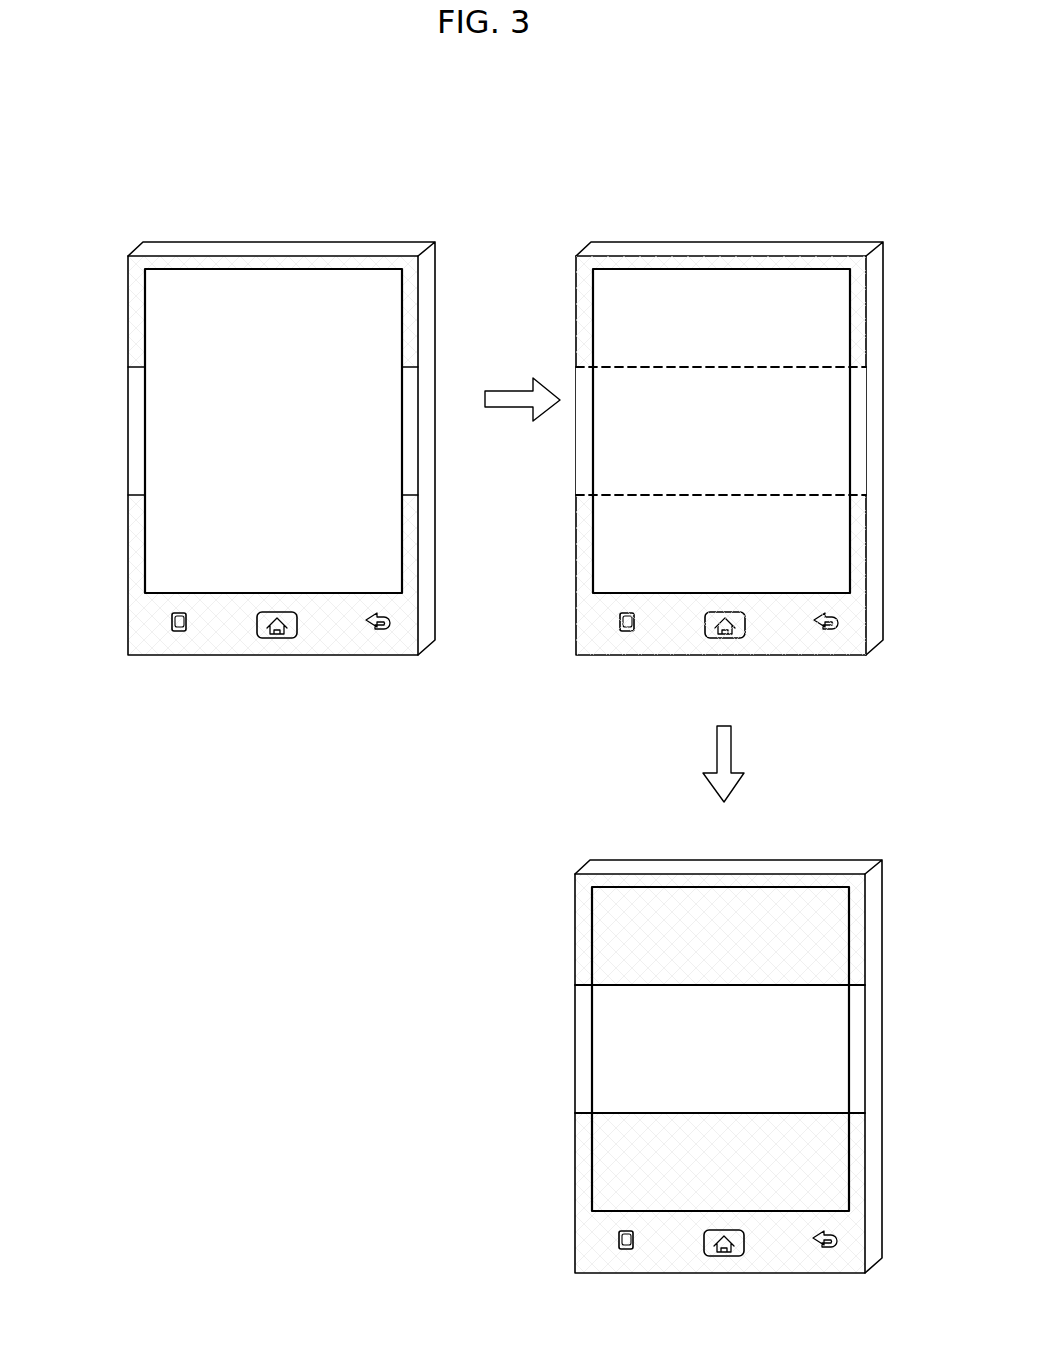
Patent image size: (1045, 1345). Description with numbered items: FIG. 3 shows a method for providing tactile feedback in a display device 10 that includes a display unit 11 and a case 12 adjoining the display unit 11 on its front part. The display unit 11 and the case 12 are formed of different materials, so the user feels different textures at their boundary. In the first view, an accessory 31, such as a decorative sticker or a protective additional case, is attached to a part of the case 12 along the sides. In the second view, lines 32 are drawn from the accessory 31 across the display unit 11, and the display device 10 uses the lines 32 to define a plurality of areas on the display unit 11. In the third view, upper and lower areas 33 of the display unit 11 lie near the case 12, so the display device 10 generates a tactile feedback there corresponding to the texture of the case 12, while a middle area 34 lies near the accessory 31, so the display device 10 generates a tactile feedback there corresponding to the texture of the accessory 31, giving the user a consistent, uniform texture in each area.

The display device 10 is at (275, 245).
The display unit 11 is at (376, 297).
The case 12 is at (410, 334).
The accessory 31 is at (410, 458).
The lines 32 is at (795, 495).
The upper and lower areas 33 is at (697, 1125).
The middle area 34 is at (599, 1092).